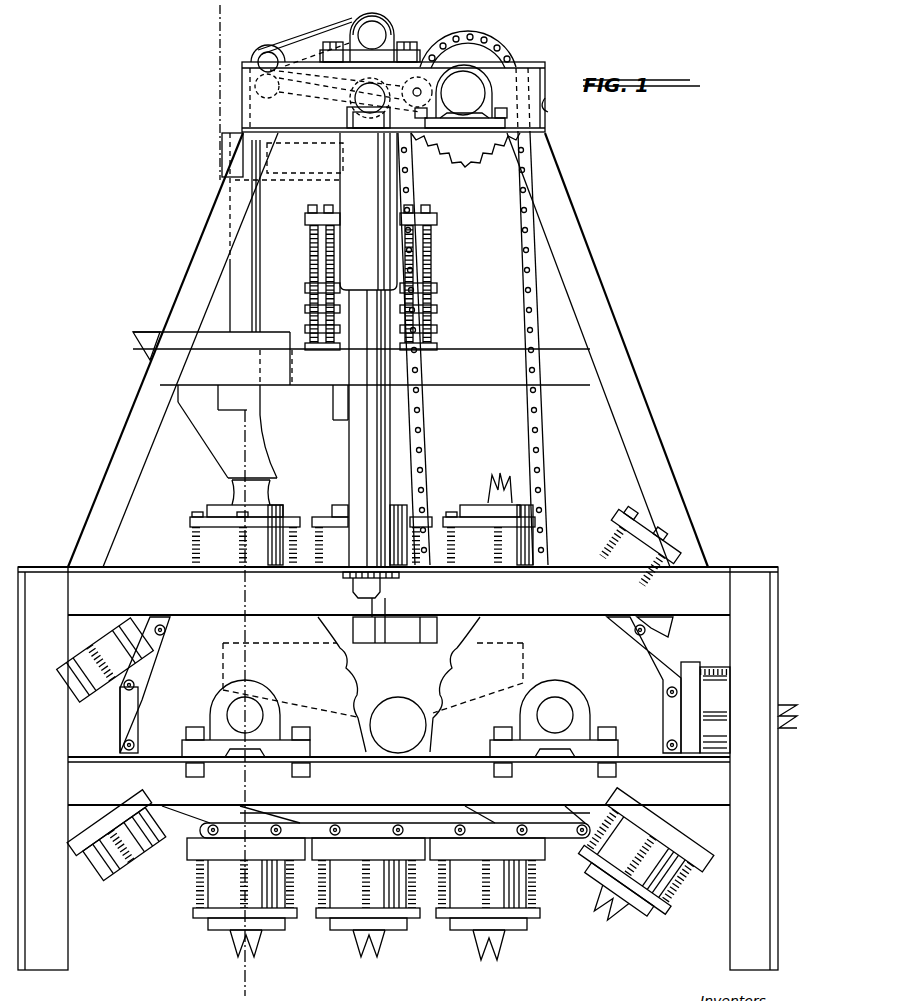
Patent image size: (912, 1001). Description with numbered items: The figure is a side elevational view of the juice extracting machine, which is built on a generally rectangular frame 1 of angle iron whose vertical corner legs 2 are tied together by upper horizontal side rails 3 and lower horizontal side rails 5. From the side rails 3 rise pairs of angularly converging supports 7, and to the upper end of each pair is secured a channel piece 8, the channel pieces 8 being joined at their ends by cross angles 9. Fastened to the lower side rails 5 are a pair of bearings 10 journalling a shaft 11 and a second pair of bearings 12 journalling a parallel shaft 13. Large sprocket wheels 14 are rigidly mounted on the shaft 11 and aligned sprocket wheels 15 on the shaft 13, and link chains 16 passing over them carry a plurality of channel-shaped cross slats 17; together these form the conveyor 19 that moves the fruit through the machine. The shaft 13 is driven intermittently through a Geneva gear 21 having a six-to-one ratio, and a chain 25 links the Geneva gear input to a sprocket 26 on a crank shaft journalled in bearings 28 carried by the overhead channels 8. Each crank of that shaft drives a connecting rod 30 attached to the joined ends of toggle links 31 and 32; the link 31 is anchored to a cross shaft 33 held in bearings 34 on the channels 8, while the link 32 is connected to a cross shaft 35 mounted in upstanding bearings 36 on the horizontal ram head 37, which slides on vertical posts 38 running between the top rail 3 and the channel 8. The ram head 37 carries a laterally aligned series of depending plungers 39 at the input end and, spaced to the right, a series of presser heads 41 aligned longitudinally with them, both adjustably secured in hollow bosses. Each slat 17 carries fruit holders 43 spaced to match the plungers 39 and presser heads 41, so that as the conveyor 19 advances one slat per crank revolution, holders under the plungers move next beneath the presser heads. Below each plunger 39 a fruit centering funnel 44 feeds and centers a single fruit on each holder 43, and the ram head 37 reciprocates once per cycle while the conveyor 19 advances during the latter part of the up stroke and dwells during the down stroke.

The frame 1 is at (740, 562).
The vertical corner legs 2 is at (216, 18).
The upper horizontal side rails 3 is at (172, 566).
The lower horizontal side rails 5 is at (170, 790).
The angularly converging supports 7 is at (134, 392).
The channel piece 8 is at (548, 112).
The cross angles 9 is at (383, 119).
The bearings 10 is at (222, 714).
The shaft 11 is at (248, 712).
The bearings 12 is at (590, 712).
The shaft 13 is at (540, 715).
The sprocket wheels 14 is at (150, 708).
The sprocket wheels 15 is at (640, 682).
The link chains 16 is at (655, 632).
The cross slats 17 is at (124, 650).
The conveyor 19 is at (186, 866).
The Geneva gear 21 is at (466, 92).
The chain 25 is at (518, 262).
The sprocket 26 is at (462, 168).
The bearings 28 is at (470, 110).
The connecting rod 30 is at (292, 99).
The toggle link 31 is at (310, 45).
The toggle link 32 is at (252, 100).
The cross shaft 33 is at (374, 34).
The bearings 34 is at (355, 22).
The cross shaft 35 is at (389, 98).
The upstanding bearings 36 is at (340, 152).
The ram head 37 is at (338, 178).
The vertical shaft 38 is at (352, 466).
The plungers 39 is at (285, 215).
The presser heads 41 is at (303, 277).
The fruit holders 43 is at (222, 500).
The fruit centering device 44 is at (130, 343).